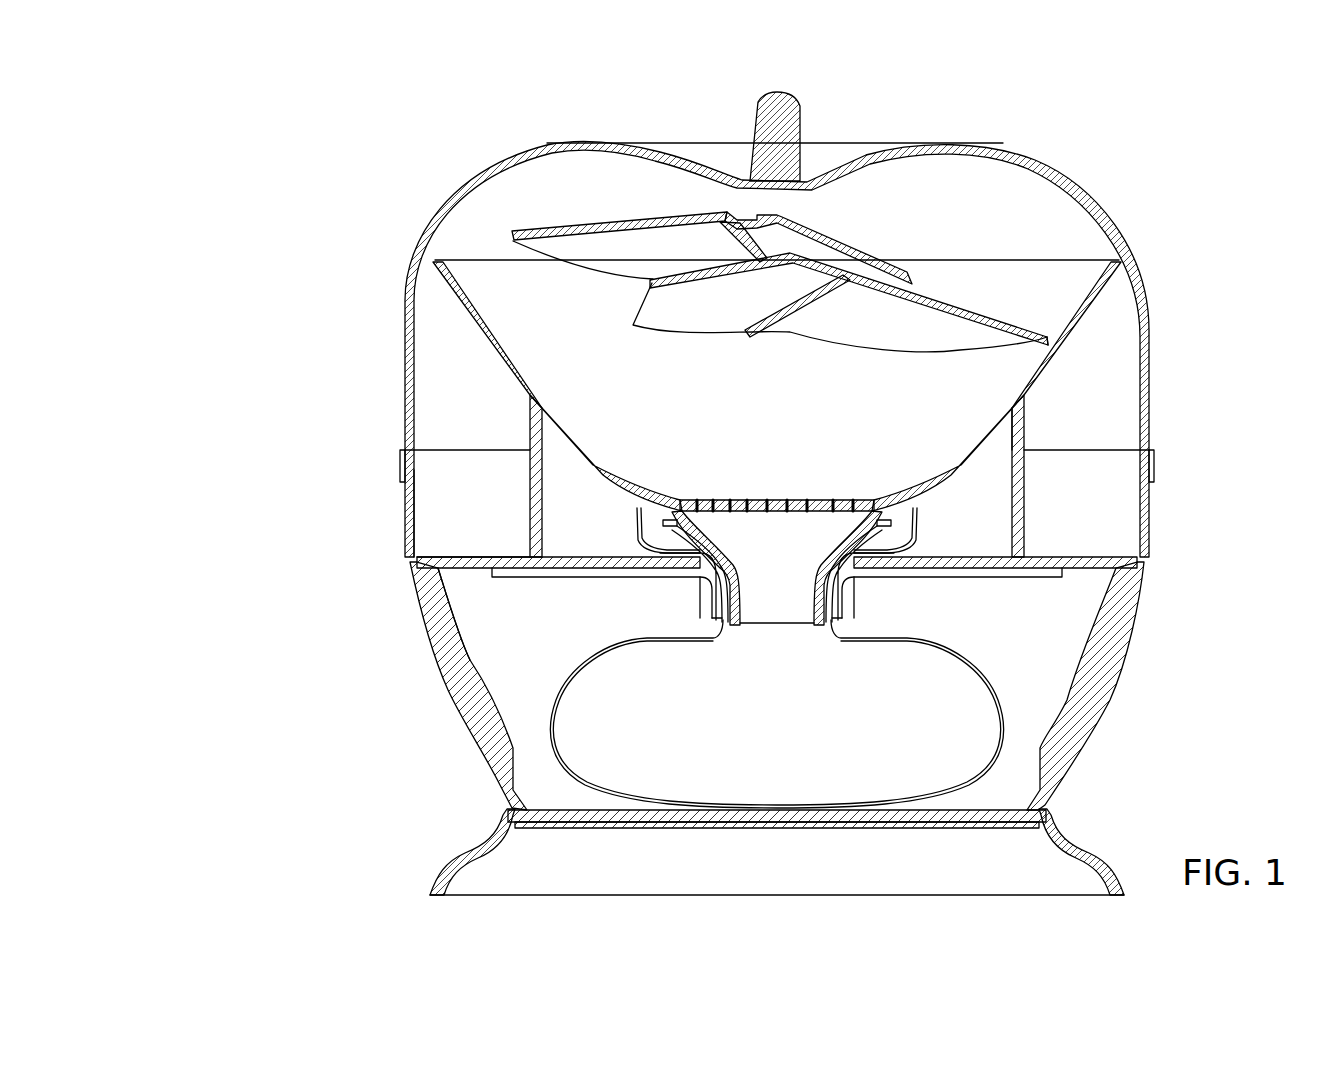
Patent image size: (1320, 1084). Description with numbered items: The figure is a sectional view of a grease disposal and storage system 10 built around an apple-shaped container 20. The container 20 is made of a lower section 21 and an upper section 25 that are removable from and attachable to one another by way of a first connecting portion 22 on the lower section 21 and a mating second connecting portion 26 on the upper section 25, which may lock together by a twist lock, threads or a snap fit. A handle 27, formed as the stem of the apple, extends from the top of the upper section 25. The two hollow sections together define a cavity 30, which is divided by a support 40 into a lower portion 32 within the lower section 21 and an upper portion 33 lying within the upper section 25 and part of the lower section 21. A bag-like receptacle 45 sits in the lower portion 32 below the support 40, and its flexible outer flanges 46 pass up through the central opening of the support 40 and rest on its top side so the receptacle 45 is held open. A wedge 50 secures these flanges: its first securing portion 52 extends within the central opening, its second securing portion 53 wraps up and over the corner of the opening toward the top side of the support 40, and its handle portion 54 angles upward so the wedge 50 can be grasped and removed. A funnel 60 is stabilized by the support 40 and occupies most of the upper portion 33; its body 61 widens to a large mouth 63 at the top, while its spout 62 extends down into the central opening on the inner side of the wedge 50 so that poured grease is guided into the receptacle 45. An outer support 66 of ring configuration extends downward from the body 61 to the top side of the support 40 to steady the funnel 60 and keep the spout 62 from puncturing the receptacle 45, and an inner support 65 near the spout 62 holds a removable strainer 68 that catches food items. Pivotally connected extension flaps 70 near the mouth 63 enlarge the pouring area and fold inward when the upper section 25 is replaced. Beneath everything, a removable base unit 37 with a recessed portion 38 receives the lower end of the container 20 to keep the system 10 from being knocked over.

The grease disposal and storage system 10 is at (298, 204).
The container 20 is at (395, 563).
The lower section 21 is at (455, 700).
The first connecting portion 22 is at (418, 487).
The upper section 25 is at (412, 270).
The second connecting portion 26 is at (402, 480).
The handle 27 is at (800, 130).
The cavity 30 is at (438, 375).
The lower portion 32 is at (477, 497).
The upper portion 33 is at (518, 618).
The base unit 37 is at (445, 860).
The recessed portion 38 is at (600, 823).
The support 40 is at (985, 527).
The receptacle 45 is at (1007, 742).
The outer flanges 46 is at (1020, 500).
The wedge 50 is at (840, 513).
The first securing portion 52 is at (840, 595).
The second securing portion 53 is at (935, 513).
The handle portion 54 is at (670, 513).
The funnel 60 is at (1102, 310).
The body 61 is at (1048, 343).
The spout 62 is at (727, 545).
The mouth 63 is at (980, 262).
The inner support 65 is at (877, 520).
The outer support 66 is at (1020, 480).
The strainer 68 is at (790, 500).
The extension flaps 70 is at (598, 222).